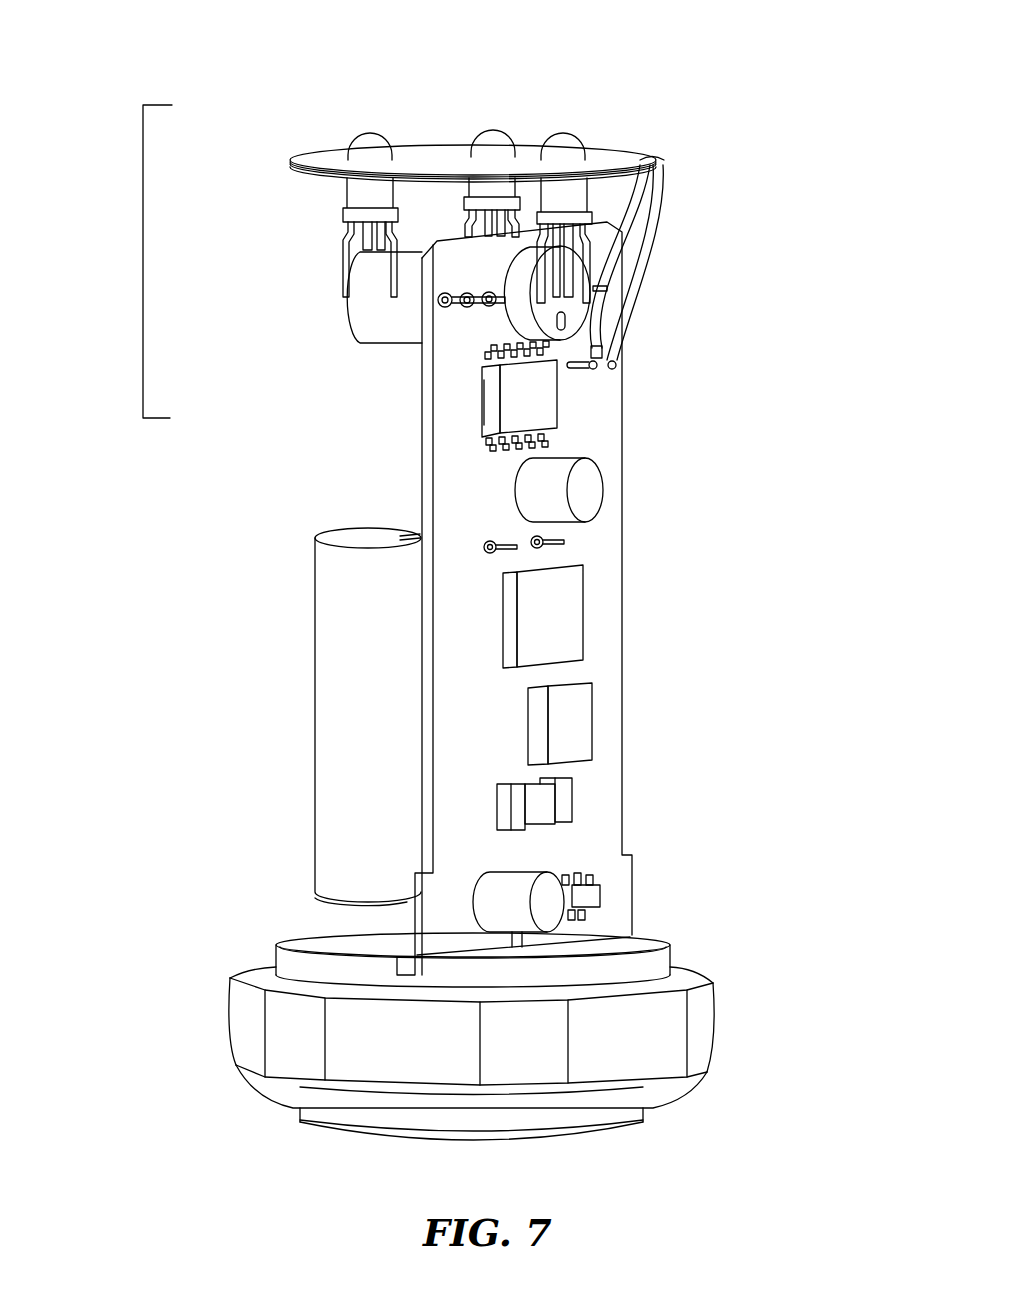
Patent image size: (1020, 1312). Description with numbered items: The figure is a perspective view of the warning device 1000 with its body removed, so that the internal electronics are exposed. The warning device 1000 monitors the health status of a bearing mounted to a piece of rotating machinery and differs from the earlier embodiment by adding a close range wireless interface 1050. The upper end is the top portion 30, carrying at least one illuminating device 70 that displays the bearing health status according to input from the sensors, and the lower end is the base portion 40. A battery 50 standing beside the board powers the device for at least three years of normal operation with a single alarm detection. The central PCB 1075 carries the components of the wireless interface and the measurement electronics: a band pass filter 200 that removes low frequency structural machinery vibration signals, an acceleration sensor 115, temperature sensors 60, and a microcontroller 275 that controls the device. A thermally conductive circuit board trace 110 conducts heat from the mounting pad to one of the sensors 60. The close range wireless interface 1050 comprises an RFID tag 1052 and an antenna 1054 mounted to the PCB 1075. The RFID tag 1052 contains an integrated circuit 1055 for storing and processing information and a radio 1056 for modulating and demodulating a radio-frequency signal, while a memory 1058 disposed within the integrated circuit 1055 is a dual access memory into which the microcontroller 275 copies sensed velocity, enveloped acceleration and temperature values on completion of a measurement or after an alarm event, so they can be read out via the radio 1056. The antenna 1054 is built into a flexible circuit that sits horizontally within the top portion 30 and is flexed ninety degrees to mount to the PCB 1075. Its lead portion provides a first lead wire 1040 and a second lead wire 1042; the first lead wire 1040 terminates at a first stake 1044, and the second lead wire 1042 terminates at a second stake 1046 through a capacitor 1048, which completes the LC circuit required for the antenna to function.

The warning device 1000 is at (731, 88).
The close range wireless interface 1050 is at (143, 265).
The top portion 30 is at (432, 158).
The illuminating device 70 is at (363, 140).
The PCB 1075 is at (437, 480).
The RFID tag 1052 is at (510, 378).
The radio 1056 is at (485, 402).
The memory 1058 is at (492, 427).
The integrated circuit 1055 is at (543, 423).
The sensor 60 is at (597, 492).
The microcontroller 275 is at (570, 595).
The band pass filter 200 is at (577, 715).
The acceleration sensor 115 is at (567, 805).
The battery 50 is at (365, 712).
The thermally conductive circuit board trace 110 is at (510, 940).
The base portion 40 is at (700, 1030).
The antenna 1054 is at (657, 160).
The second lead wire 1042 is at (635, 220).
The first lead wire 1040 is at (645, 247).
The capacitor 1048 is at (598, 350).
The first stake 1044 is at (617, 363).
The second stake 1046 is at (597, 369).